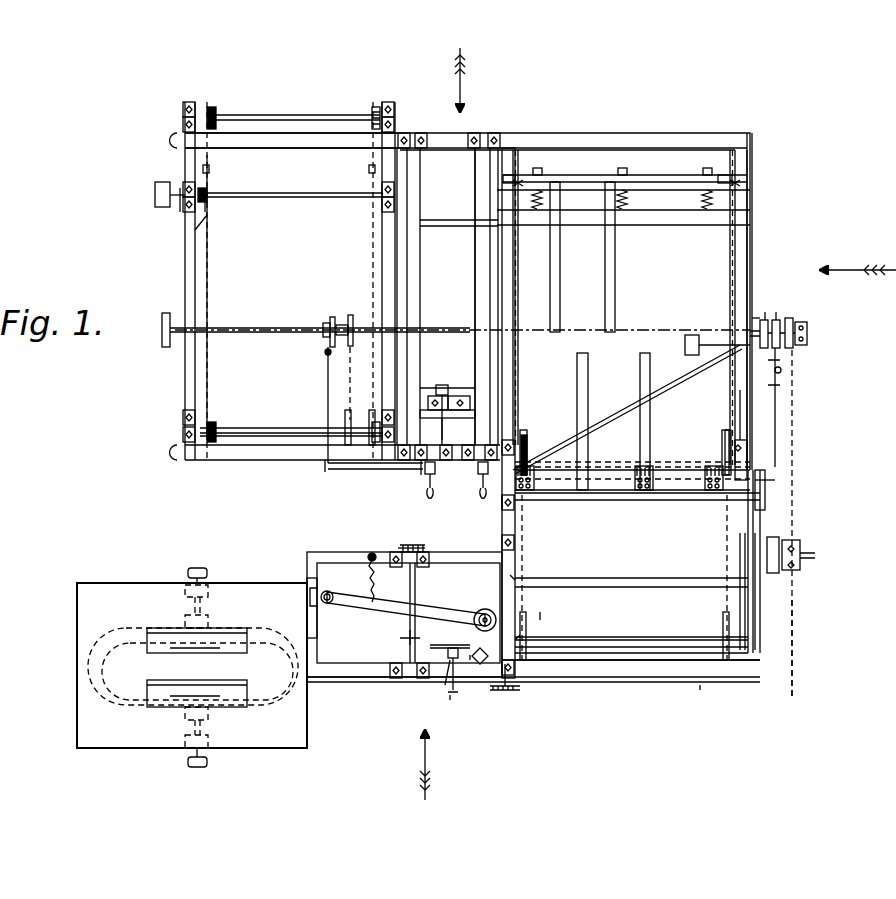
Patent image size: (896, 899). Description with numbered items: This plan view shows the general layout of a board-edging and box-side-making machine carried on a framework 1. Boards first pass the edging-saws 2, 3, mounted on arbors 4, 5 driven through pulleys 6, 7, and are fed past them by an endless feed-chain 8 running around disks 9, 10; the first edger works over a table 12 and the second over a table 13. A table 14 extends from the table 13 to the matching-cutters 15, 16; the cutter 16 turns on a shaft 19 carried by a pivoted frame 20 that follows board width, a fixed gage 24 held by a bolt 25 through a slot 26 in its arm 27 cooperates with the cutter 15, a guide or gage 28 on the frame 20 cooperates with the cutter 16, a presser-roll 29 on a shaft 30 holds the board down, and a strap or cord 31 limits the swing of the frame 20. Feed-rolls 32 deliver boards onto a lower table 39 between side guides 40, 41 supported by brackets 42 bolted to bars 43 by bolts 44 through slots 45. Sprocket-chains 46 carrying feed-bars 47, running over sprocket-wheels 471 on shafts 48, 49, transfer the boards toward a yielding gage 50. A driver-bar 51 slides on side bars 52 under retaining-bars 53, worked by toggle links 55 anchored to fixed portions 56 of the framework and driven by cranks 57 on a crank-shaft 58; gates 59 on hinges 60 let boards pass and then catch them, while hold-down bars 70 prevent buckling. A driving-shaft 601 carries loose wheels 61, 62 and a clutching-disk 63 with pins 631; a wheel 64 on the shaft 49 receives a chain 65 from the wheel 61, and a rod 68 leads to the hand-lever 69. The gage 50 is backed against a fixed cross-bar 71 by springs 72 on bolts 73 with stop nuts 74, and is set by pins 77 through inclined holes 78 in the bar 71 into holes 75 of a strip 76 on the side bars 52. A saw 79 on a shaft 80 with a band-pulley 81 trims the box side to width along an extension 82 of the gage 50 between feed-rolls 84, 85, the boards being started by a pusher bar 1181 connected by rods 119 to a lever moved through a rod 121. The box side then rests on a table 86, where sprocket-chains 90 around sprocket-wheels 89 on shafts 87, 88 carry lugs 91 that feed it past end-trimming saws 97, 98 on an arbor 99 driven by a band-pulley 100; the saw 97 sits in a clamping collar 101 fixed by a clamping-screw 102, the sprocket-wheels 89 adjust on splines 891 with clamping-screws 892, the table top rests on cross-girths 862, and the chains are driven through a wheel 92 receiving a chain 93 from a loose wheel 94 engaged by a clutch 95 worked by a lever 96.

The framework 1 is at (660, 133).
The edging-saw 2 is at (250, 705).
The edging-saw 3 is at (215, 645).
The arbor or shaft 4 is at (152, 798).
The arbor or shaft 5 is at (192, 602).
The pulley 6 is at (205, 770).
The pulley 7 is at (200, 565).
The endless feed-chain 8 is at (240, 700).
The disk 9 is at (86, 668).
The disk 10 is at (310, 678).
The table or platform 12 is at (308, 748).
The table or platform 13 is at (75, 605).
The table 14 is at (310, 600).
The matching-cutter 15 is at (480, 665).
The matching-cutter 16 is at (487, 608).
The shaft 19 is at (492, 665).
The frame 20 is at (395, 612).
The fixed gage 24 is at (470, 660).
The screw or bolt 25 is at (452, 660).
The slot 26 is at (452, 700).
The arm 27 is at (458, 662).
The guide or gage 28 is at (440, 640).
The presser-roll 29 is at (400, 625).
The shaft 30 is at (405, 590).
The strap or cord 31 is at (370, 580).
The feed-rolls 32 is at (540, 620).
The table 39 is at (632, 665).
The side guide 40 is at (670, 582).
The side guide 41 is at (690, 690).
The brackets 42 is at (520, 580).
The bars 43 is at (757, 598).
The bolts 44 is at (748, 570).
The slots 45 is at (618, 588).
The sprocket-chains 46 is at (530, 513).
The feed-bars 47 is at (636, 502).
The shaft 48 is at (688, 652).
The shaft 49 is at (668, 460).
The gage 50 is at (708, 225).
The driver-bar 51 is at (606, 492).
The side bars 52 is at (505, 347).
The retaining-bars 53 is at (520, 495).
The toggle links 55 is at (498, 535).
The fixed portions of the framework 56 is at (468, 430).
The cranks 57 is at (802, 550).
The crank-shaft 58 is at (803, 560).
The gate 59 is at (620, 465).
The hinge 60 is at (765, 470).
The pulley or sprocket-wheel 61 is at (766, 318).
The pulley or sprocket-wheel 62 is at (790, 320).
The clutching-disk 63 is at (778, 318).
The band-pulley or sprocket-wheel 64 is at (780, 450).
The band or link chain 65 is at (778, 385).
The rod 68 is at (742, 440).
The hand-lever 69 is at (483, 475).
The hold-down devices 70 is at (552, 265).
The cross-bar 71 is at (655, 173).
The springs 72 is at (537, 188).
The bolts 73 is at (542, 228).
The nuts 74 is at (540, 166).
The holes 75 is at (732, 252).
The bar or strip 76 is at (512, 244).
The pins or bolts 77 is at (508, 173).
The holes 78 is at (510, 183).
The saw 79 is at (437, 385).
The shaft 80 is at (450, 438).
The band-pulley 81 is at (428, 472).
The extension 82 is at (459, 212).
The feed-rolls 84 is at (478, 285).
The feed-rolls 85 is at (395, 262).
The table 86 is at (236, 240).
The shaft 87 is at (285, 462).
The shaft 88 is at (293, 112).
The sprocket-wheels 89 is at (207, 110).
The sprocket-chains 90 is at (372, 210).
The lugs 91 is at (212, 175).
The band-pulley or sprocket-wheel 92 is at (345, 420).
The band or link chain 93 is at (347, 368).
The loose pulley or sprocket-wheel 94 is at (349, 313).
The clutch device 95 is at (328, 320).
The lever 96 is at (325, 375).
The saw 97 is at (185, 210).
The saw 98 is at (398, 222).
The shaft or arbor 99 is at (210, 195).
The band-pulley 100 is at (153, 198).
The saw-clamping collar 101 is at (210, 193).
The clamping-screw 102 is at (210, 200).
The rods 119 is at (705, 348).
The rod 121 is at (620, 418).
The sprocket-wheels 471 is at (527, 440).
The driving-shaft 601 is at (760, 320).
The pins 631 is at (782, 318).
The cross-girths 862 is at (330, 133).
The splines 891 is at (247, 112).
The clamping-screws 892 is at (212, 105).
The pusher bar 1181 is at (685, 340).